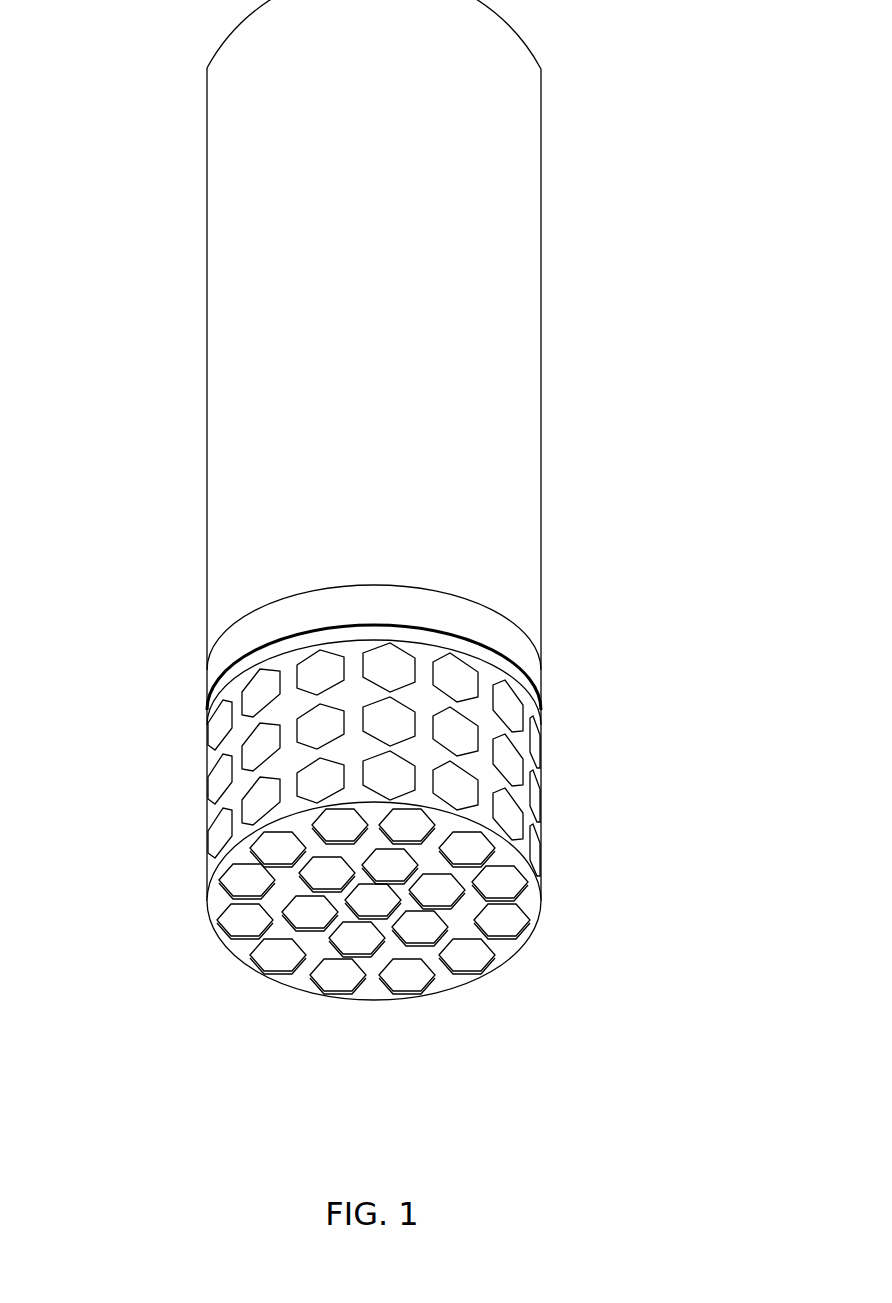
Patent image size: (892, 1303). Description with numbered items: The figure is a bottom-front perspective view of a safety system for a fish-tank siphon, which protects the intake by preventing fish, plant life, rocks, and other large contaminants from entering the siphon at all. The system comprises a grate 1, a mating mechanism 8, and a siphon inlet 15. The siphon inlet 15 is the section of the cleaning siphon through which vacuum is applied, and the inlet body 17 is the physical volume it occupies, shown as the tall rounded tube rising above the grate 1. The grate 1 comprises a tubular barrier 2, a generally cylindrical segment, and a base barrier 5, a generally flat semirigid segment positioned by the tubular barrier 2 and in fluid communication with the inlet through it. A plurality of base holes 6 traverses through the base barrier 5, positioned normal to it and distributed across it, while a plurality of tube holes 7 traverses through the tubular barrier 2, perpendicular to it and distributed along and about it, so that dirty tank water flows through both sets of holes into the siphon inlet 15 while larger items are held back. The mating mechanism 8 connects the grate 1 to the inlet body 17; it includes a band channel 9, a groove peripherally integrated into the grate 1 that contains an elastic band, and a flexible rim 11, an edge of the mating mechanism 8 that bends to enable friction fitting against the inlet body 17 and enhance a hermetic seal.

The grate 1 is at (143, 852).
The tubular barrier 2 is at (525, 805).
The base barrier 5 is at (242, 952).
The plurality of base holes 6 is at (330, 987).
The plurality of tube holes 7 is at (213, 737).
The mating mechanism 8 is at (577, 670).
The band channel 9 is at (541, 703).
The flexible rim 11 is at (393, 597).
The siphon inlet 15 is at (527, 158).
The inlet body 17 is at (363, 190).